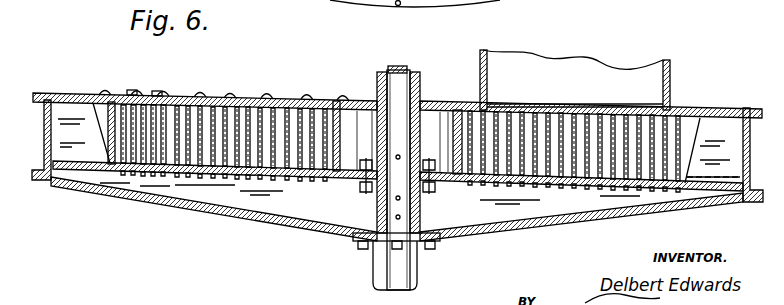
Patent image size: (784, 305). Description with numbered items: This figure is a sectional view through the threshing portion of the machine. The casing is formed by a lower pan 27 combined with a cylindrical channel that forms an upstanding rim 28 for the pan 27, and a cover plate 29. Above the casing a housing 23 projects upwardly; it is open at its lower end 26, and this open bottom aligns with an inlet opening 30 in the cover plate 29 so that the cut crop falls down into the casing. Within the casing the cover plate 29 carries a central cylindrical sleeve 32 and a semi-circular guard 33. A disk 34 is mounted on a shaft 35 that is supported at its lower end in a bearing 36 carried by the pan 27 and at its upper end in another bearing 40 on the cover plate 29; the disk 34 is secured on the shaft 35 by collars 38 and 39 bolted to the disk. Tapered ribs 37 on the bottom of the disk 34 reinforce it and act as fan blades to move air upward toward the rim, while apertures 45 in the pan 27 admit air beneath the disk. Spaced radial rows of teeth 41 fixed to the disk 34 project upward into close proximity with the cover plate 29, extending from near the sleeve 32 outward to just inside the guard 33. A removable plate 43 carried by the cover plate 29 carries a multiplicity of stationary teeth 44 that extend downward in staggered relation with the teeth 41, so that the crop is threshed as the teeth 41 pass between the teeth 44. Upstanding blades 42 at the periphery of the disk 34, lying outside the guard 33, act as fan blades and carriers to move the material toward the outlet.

The housing 23 is at (610, 70).
The open lower end of housing 26 is at (530, 104).
The lower pan 27 is at (220, 212).
The upstanding rim 28 is at (44, 125).
The cover plate 29 is at (50, 93).
The inlet opening 30 is at (570, 107).
The central cylindrical sleeve 32 is at (456, 117).
The semi-circular guard 33 is at (110, 117).
The disk 34 is at (63, 178).
The shaft 35 is at (396, 66).
The supporting bearing 36 is at (385, 274).
The tapered ribs 37 is at (347, 208).
The collar 38 is at (414, 150).
The collar 39 is at (424, 222).
The bearing 40 is at (377, 80).
The teeth 41 is at (205, 117).
The upstanding blades 42 is at (60, 142).
The plate 43 is at (254, 98).
The teeth 44 is at (153, 100).
The apertures 45 is at (487, 230).